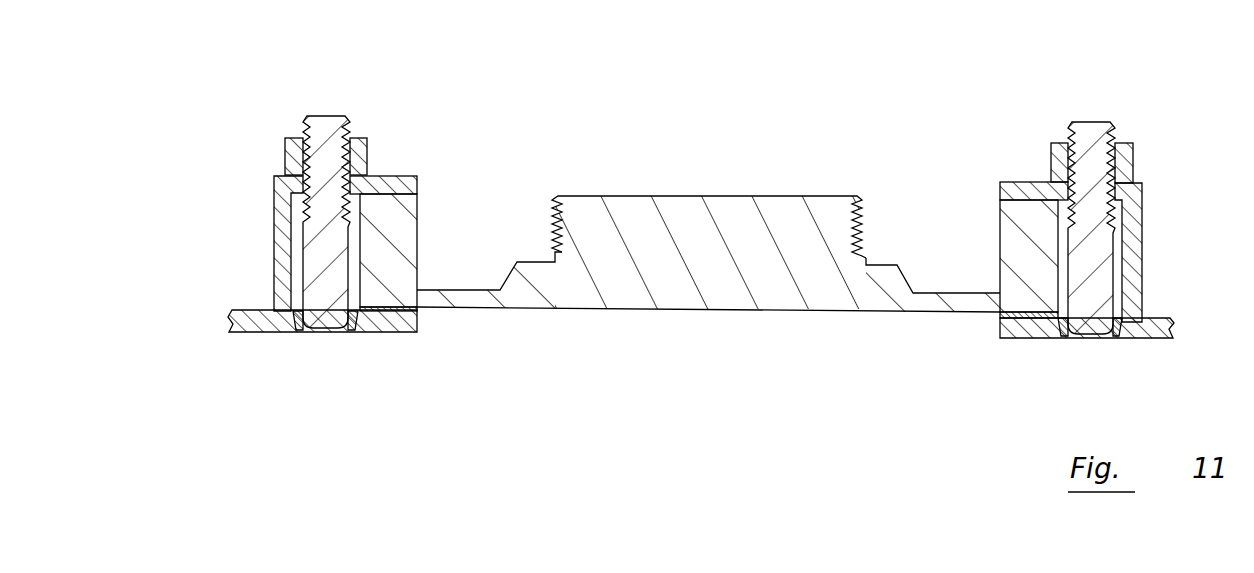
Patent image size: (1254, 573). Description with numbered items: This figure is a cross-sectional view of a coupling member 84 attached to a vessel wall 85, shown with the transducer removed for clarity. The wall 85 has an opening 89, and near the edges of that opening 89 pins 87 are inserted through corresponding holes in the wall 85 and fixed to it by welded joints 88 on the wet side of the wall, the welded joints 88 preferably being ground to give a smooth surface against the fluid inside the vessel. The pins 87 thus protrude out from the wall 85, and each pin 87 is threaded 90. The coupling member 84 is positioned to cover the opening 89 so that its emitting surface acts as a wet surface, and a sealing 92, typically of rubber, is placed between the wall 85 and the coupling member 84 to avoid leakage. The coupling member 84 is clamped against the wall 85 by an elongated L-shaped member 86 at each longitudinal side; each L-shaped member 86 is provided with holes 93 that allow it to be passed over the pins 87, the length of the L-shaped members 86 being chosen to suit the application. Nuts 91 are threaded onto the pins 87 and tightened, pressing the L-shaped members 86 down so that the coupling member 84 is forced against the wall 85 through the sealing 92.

The coupling member 84 is at (687, 303).
The vessel wall 85 is at (248, 332).
The L-shaped member 86 is at (274, 228).
The pin 87 is at (330, 116).
The welded joint 88 is at (345, 332).
The opening 89 is at (557, 325).
The thread 90 is at (350, 127).
The nut 91 is at (285, 145).
The sealing 92 is at (415, 312).
The hole 93 is at (1120, 192).